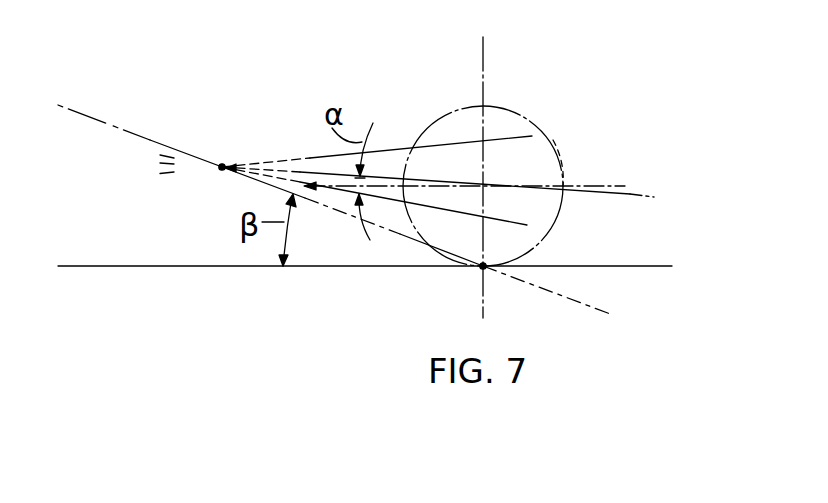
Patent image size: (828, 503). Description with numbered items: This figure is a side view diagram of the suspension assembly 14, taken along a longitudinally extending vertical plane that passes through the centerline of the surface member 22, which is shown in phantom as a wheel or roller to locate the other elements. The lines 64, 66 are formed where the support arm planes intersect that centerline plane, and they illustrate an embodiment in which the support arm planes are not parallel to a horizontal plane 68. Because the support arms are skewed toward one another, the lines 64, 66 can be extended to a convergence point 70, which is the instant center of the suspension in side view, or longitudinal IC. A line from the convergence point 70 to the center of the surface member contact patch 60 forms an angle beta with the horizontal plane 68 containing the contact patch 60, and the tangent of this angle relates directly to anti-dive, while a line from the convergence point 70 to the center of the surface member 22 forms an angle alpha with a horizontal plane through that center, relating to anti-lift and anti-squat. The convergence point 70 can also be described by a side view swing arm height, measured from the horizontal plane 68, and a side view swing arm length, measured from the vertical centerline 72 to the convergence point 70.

The suspension assembly 14 is at (546, 94).
The surface member 22 is at (553, 140).
The surface member contact patch 60 is at (487, 268).
The line 64 is at (461, 210).
The line 66 is at (630, 194).
The horizontal plane 68 is at (622, 266).
The convergence point 70 is at (222, 165).
The vertical centerline 72 is at (483, 75).